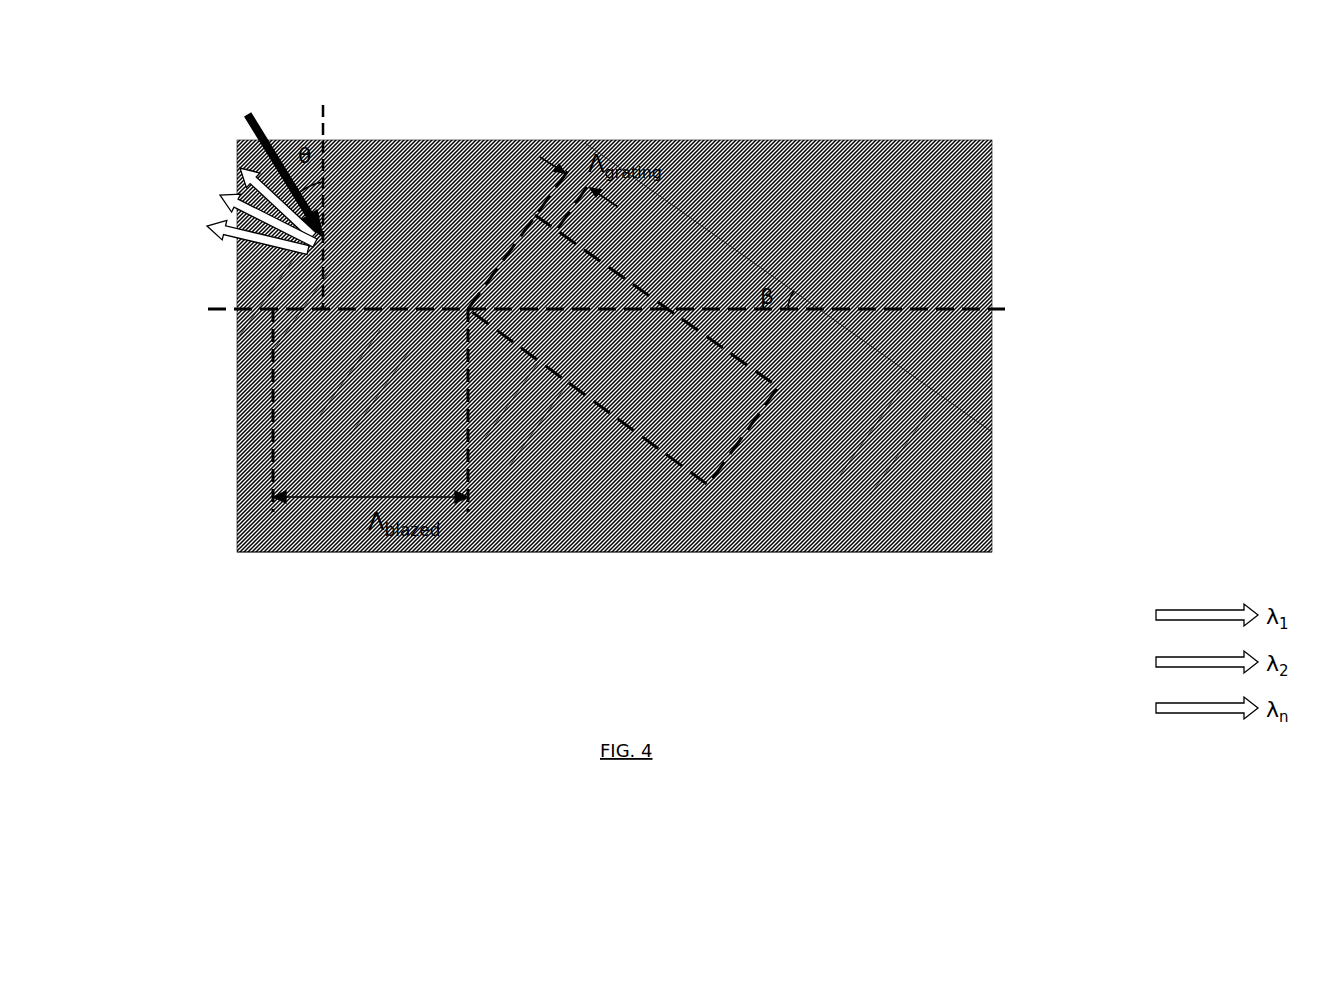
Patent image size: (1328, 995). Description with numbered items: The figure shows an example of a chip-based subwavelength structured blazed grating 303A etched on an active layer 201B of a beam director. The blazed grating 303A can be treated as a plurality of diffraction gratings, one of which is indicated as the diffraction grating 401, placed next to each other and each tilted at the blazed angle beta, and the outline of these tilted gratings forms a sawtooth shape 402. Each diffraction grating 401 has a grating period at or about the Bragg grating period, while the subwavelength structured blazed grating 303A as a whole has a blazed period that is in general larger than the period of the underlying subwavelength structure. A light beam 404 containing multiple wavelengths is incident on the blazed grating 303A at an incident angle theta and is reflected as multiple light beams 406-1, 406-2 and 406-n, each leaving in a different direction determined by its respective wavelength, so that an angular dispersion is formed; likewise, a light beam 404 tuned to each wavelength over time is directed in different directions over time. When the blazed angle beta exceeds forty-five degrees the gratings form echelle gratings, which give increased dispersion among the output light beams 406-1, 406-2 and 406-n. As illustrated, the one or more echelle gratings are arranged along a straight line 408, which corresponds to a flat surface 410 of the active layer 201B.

The active layer 201B is at (1000, 532).
The blazed grating 303A is at (833, 174).
The diffraction grating 401 is at (633, 282).
The sawtooth shape 402 is at (857, 447).
The light beam 404 is at (248, 115).
The reflected light beam 406-1 is at (240, 168).
The reflected light beam 406-2 is at (220, 193).
The reflected light beam 406-n is at (210, 225).
The straight line 408 is at (1007, 306).
The surface 410 is at (937, 533).